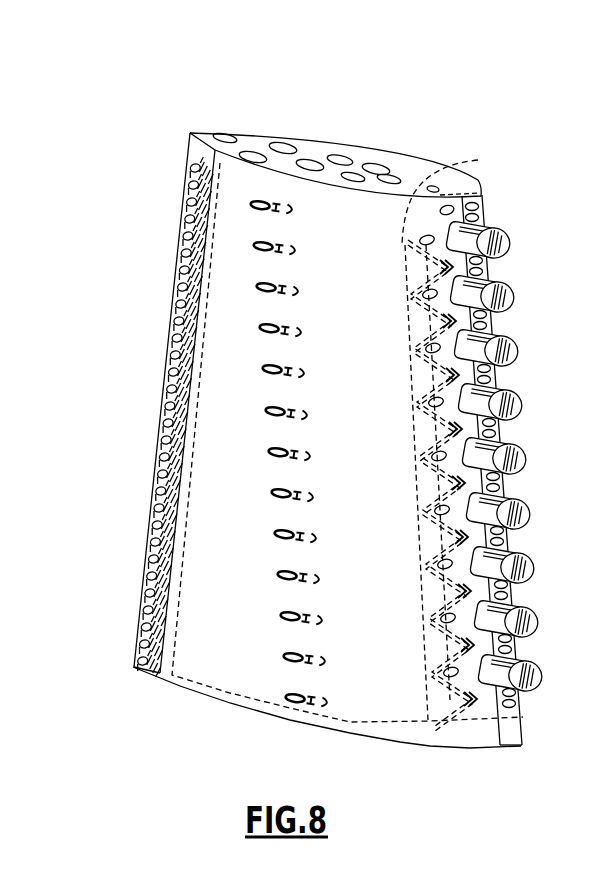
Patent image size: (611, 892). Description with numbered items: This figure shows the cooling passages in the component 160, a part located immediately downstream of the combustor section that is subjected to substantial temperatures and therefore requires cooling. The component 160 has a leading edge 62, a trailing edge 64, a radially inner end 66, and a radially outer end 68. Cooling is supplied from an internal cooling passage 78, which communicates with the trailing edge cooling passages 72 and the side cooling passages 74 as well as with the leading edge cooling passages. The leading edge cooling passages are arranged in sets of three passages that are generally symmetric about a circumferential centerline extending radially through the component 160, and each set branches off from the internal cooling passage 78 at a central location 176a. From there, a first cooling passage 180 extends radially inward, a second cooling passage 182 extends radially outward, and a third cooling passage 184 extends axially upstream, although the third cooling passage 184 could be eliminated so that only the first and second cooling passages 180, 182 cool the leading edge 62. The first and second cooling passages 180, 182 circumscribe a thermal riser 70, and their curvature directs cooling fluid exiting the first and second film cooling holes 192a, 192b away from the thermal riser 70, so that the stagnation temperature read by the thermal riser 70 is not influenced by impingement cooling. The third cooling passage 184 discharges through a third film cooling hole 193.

The component 160 is at (480, 83).
The radially inner end 66 is at (320, 144).
The third cooling passage 184 is at (405, 247).
The central location 176a is at (468, 158).
The first cooling passage 180 is at (484, 186).
The leading edge 62 is at (485, 212).
The thermal riser 70 is at (522, 292).
The second cooling passage 182 is at (420, 262).
The third film cooling hole 193 is at (408, 378).
The first film cooling hole 192a is at (492, 369).
The second film cooling hole 192b is at (492, 383).
The trailing edge 64 is at (163, 390).
The trailing edge cooling passages 72 is at (143, 627).
The side cooling passages 74 is at (312, 660).
The internal cooling passage 78 is at (420, 735).
The radially outer end 68 is at (477, 750).